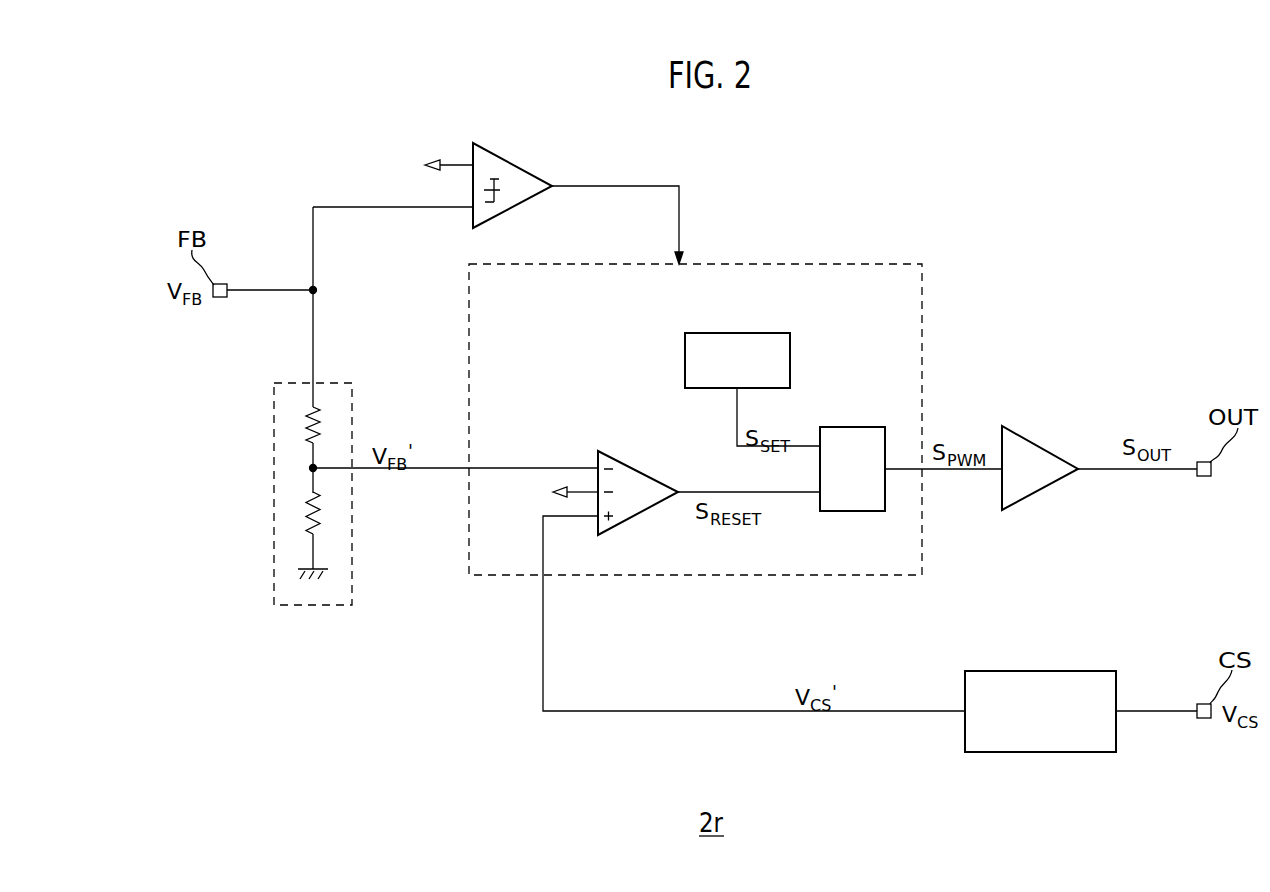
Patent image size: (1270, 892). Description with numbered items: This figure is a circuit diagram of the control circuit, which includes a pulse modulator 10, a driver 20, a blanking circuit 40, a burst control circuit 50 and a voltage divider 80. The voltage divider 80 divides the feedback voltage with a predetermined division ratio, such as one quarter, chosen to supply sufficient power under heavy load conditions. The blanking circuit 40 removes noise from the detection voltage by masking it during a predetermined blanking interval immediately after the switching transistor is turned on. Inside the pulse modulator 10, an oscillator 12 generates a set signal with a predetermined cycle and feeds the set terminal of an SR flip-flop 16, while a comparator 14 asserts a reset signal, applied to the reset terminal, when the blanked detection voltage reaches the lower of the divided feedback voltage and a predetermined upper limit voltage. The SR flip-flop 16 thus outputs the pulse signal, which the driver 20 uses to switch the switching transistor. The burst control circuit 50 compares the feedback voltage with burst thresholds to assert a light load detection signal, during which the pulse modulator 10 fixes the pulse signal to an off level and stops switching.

The pulse modulator 10 is at (733, 264).
The oscillator 12 is at (774, 334).
The comparator 14 is at (640, 468).
The SR flip-flop 16 is at (856, 427).
The driver 20 is at (1028, 438).
The blanking circuit 40 is at (1054, 671).
The burst control circuit 50 is at (506, 157).
The voltage divider 80 is at (312, 606).